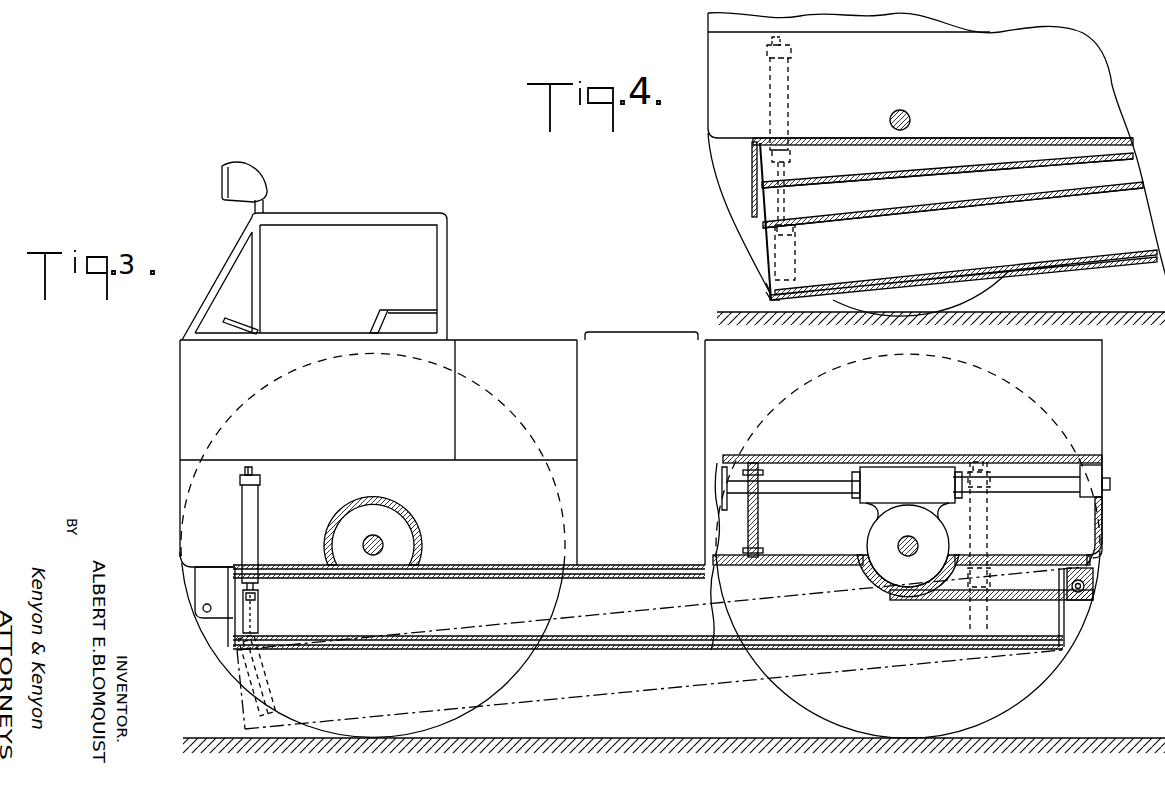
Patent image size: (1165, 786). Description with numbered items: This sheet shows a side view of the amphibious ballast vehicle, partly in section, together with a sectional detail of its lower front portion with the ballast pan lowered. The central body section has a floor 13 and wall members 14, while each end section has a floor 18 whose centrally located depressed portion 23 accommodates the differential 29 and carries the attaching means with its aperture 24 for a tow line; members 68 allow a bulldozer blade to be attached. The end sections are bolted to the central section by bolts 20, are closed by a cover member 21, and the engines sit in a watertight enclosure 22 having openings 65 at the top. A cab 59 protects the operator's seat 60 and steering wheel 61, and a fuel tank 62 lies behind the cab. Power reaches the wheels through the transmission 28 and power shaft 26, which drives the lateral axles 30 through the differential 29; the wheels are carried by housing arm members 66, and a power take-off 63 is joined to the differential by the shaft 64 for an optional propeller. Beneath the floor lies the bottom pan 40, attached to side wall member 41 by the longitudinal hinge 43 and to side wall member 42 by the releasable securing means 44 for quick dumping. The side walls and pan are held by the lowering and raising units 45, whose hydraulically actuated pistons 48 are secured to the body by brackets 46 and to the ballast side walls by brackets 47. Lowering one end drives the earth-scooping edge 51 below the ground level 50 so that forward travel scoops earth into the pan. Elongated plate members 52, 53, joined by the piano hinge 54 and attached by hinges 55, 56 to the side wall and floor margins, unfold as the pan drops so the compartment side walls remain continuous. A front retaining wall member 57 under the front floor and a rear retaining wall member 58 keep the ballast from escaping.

In FIG. 3, the floor 13 is at (733, 572).
In FIG. 3, the wall members 14 is at (577, 383).
In FIG. 3, the floor 18 is at (828, 556).
In FIG. 3, the bolts 20 is at (760, 468).
In FIG. 3, the cover member 21 is at (952, 455).
In FIG. 3, the enclosure 22 is at (706, 390).
In FIG. 3, the depressed portion 23 is at (875, 585).
In FIG. 3, the aperture 24 is at (203, 608).
In FIG. 3, the power shaft 26 is at (805, 489).
In FIG. 3, the transmission 28 is at (726, 502).
In FIG. 3, the differential 29 is at (870, 528).
In FIG. 3, the lateral axles 30 is at (383, 540).
In FIG. 4, the lateral axles 30 is at (905, 110).
In FIG. 3, the bottom pan 40 is at (648, 690).
In FIG. 4, the bottom pan 40 is at (950, 278).
In FIG. 4, the side wall member 41 is at (766, 258).
In FIG. 3, the side wall member 42 is at (655, 648).
In FIG. 4, the hinge 43 is at (768, 298).
In FIG. 3, the releasable securing means 44 is at (387, 650).
In FIG. 3, the lowering and raising units 45 is at (258, 520).
In FIG. 4, the lowering and raising units 45 is at (790, 75).
In FIG. 3, the brackets 46 is at (255, 470).
In FIG. 4, the brackets 46 is at (768, 42).
In FIG. 3, the brackets 47 is at (258, 618).
In FIG. 4, the brackets 47 is at (797, 255).
In FIG. 3, the hydraulically actuated pistons 48 is at (258, 583).
In FIG. 4, the hydraulically actuated pistons 48 is at (788, 200).
In FIG. 3, the ground level 50 is at (735, 738).
In FIG. 4, the ground level 50 is at (1072, 312).
In FIG. 3, the earth-scooping edge 51 is at (240, 648).
In FIG. 4, the earth-scooping edge 51 is at (766, 283).
In FIG. 4, the plate member 52 is at (962, 186).
In FIG. 3, the plate member 53 is at (668, 565).
In FIG. 4, the plate member 53 is at (1003, 145).
In FIG. 4, the hinge 54 is at (1027, 166).
In FIG. 3, the hinge 55 is at (606, 565).
In FIG. 4, the hinge 55 is at (1047, 190).
In FIG. 3, the hinges 56 is at (462, 563).
In FIG. 4, the hinges 56 is at (1035, 138).
In FIG. 3, the front retaining wall member 57 is at (228, 628).
In FIG. 4, the front retaining wall member 57 is at (752, 188).
In FIG. 3, the rear retaining wall member 58 is at (1068, 628).
In FIG. 3, the cab 59 is at (447, 268).
In FIG. 3, the operator's seat 60 is at (380, 310).
In FIG. 3, the steering wheel 61 is at (247, 320).
In FIG. 3, the fuel tank 62 is at (532, 345).
In FIG. 3, the power take-off 63 is at (1106, 483).
In FIG. 3, the shaft 64 is at (1015, 490).
In FIG. 3, the openings 65 is at (625, 332).
In FIG. 3, the housing arm members 66 is at (388, 502).
In FIG. 3, the members 68 is at (182, 545).